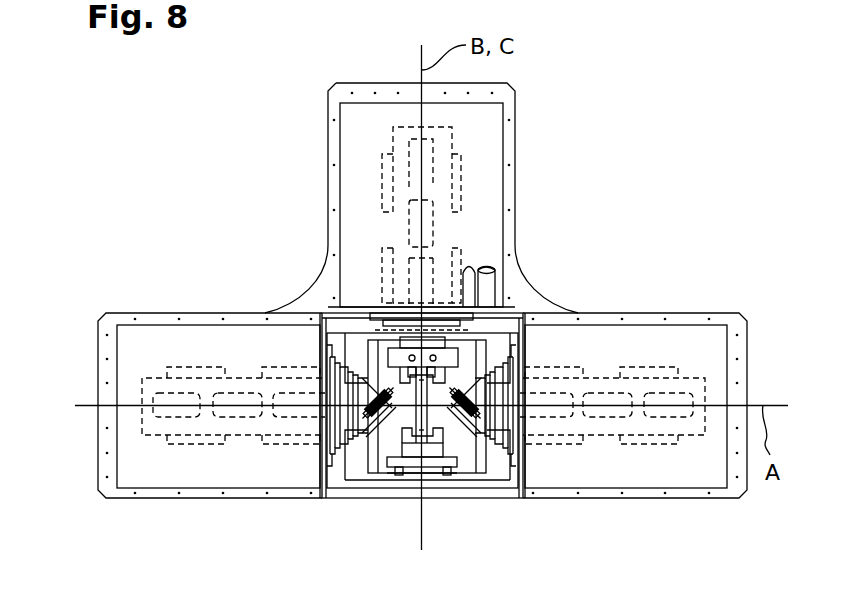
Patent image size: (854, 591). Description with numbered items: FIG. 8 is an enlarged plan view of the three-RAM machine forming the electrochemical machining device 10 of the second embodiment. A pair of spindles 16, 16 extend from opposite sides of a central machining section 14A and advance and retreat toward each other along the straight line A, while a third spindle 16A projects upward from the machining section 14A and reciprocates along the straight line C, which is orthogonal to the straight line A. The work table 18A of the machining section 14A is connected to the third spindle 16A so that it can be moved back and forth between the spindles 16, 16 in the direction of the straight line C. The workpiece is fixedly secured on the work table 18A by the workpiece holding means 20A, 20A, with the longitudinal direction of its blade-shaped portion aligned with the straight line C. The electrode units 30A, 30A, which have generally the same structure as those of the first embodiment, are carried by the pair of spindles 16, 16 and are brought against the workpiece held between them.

The electrochemical machining device 10 is at (617, 213).
The machining section 14A is at (378, 511).
The spindle 16 is at (152, 375).
The third spindle 16A is at (452, 145).
The work table 18A is at (463, 452).
The workpiece holding means 20A is at (442, 372).
The electrode unit 30A is at (365, 388).